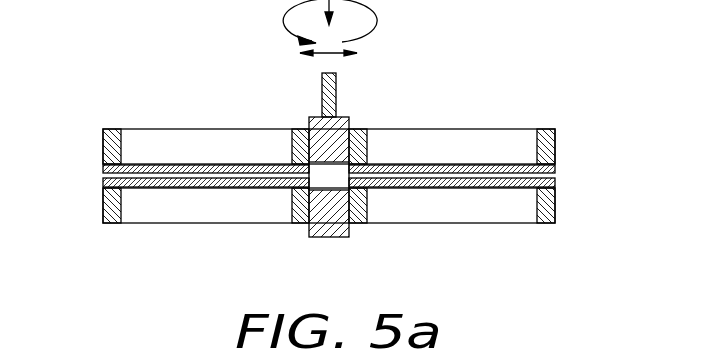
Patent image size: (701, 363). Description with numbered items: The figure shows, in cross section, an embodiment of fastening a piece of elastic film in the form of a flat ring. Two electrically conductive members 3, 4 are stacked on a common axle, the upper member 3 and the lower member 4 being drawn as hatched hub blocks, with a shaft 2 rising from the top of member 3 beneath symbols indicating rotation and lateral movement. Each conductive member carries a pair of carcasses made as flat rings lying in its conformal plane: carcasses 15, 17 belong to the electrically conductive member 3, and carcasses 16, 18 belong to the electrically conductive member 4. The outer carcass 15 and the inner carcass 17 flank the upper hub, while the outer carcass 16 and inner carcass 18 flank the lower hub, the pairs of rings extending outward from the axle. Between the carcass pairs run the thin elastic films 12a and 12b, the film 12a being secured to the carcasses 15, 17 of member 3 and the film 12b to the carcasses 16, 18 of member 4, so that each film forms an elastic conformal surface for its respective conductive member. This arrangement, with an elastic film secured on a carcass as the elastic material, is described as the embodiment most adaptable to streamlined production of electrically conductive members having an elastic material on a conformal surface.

The drive shaft 2 is at (298, 83).
The electrically conductive member 3 is at (343, 117).
The electrically conductive member 4 is at (340, 237).
The film 12a is at (508, 167).
The film 12b is at (517, 192).
The carcass 15 is at (103, 150).
The carcass 16 is at (110, 206).
The carcass 17 is at (290, 147).
The carcass 18 is at (288, 205).